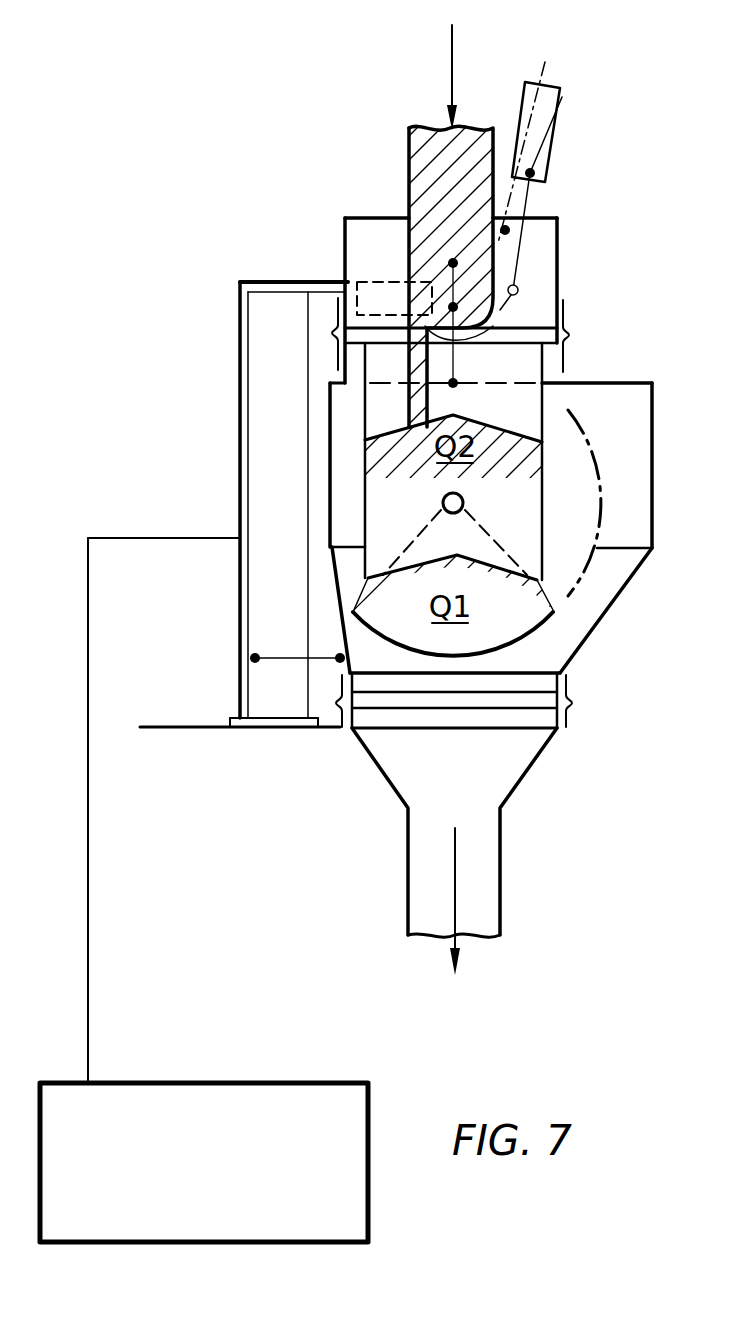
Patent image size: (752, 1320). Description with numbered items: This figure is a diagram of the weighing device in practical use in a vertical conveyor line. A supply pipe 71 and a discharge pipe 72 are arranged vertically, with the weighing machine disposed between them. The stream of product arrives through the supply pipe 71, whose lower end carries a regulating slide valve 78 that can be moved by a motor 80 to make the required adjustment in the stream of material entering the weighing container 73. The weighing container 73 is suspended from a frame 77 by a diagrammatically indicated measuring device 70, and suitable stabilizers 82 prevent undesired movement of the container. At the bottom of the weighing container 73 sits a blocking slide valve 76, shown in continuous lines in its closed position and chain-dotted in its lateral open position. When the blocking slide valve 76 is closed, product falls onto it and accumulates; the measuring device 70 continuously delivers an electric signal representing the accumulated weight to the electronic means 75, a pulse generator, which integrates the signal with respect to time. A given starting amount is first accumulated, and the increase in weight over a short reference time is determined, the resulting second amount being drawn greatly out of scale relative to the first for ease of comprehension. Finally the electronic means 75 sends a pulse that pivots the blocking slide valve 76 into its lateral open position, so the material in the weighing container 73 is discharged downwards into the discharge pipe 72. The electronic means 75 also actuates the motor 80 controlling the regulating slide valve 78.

The measuring device 70 is at (390, 307).
The supply pipe 71 is at (409, 165).
The discharge pipe 72 is at (503, 902).
The weighing container 73 is at (542, 450).
The electronic means 75 is at (173, 1214).
The blocking slide valve 76 is at (520, 637).
The frame 77 is at (240, 465).
The regulating slide valve 78 is at (473, 333).
The motor 80 is at (553, 82).
The stabilizers 82 is at (277, 656).